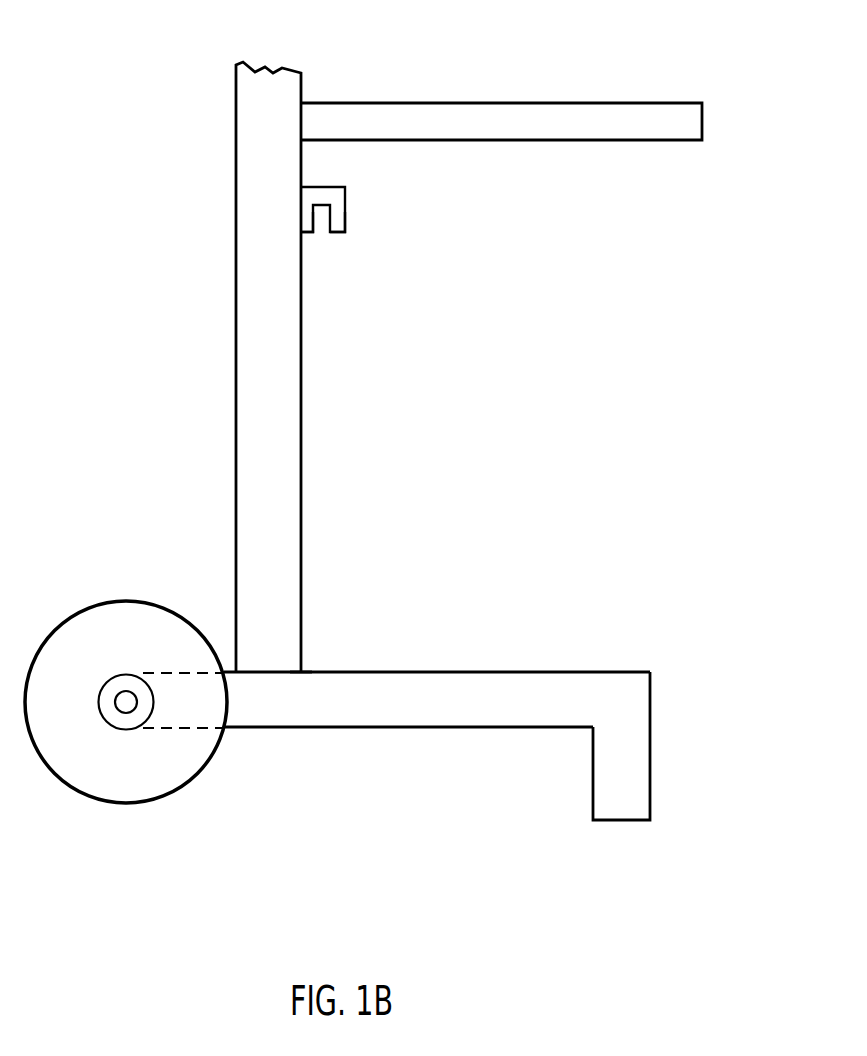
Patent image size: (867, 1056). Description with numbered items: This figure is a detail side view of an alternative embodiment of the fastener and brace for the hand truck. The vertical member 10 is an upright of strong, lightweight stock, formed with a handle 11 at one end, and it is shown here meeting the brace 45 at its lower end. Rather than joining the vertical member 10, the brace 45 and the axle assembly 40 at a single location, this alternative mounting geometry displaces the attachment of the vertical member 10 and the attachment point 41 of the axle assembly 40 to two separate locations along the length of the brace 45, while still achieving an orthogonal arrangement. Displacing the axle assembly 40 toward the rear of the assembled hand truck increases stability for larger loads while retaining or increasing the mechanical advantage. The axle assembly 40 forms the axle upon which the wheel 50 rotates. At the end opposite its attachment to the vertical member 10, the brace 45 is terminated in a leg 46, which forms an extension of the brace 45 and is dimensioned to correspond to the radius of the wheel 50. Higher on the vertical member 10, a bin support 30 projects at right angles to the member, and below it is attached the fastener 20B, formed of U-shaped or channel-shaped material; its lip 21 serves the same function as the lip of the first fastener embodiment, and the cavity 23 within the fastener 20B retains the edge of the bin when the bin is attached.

The vertical member 10 is at (303, 402).
The handle 11 is at (303, 671).
The fastener 20B is at (347, 200).
The lip 21 is at (345, 235).
The cavity 23 is at (323, 236).
The bin support 30 is at (585, 101).
The axle assembly 40 is at (126, 672).
The attachment point 41 is at (138, 731).
The brace 45 is at (484, 671).
The leg 46 is at (653, 733).
The wheel 50 is at (92, 803).